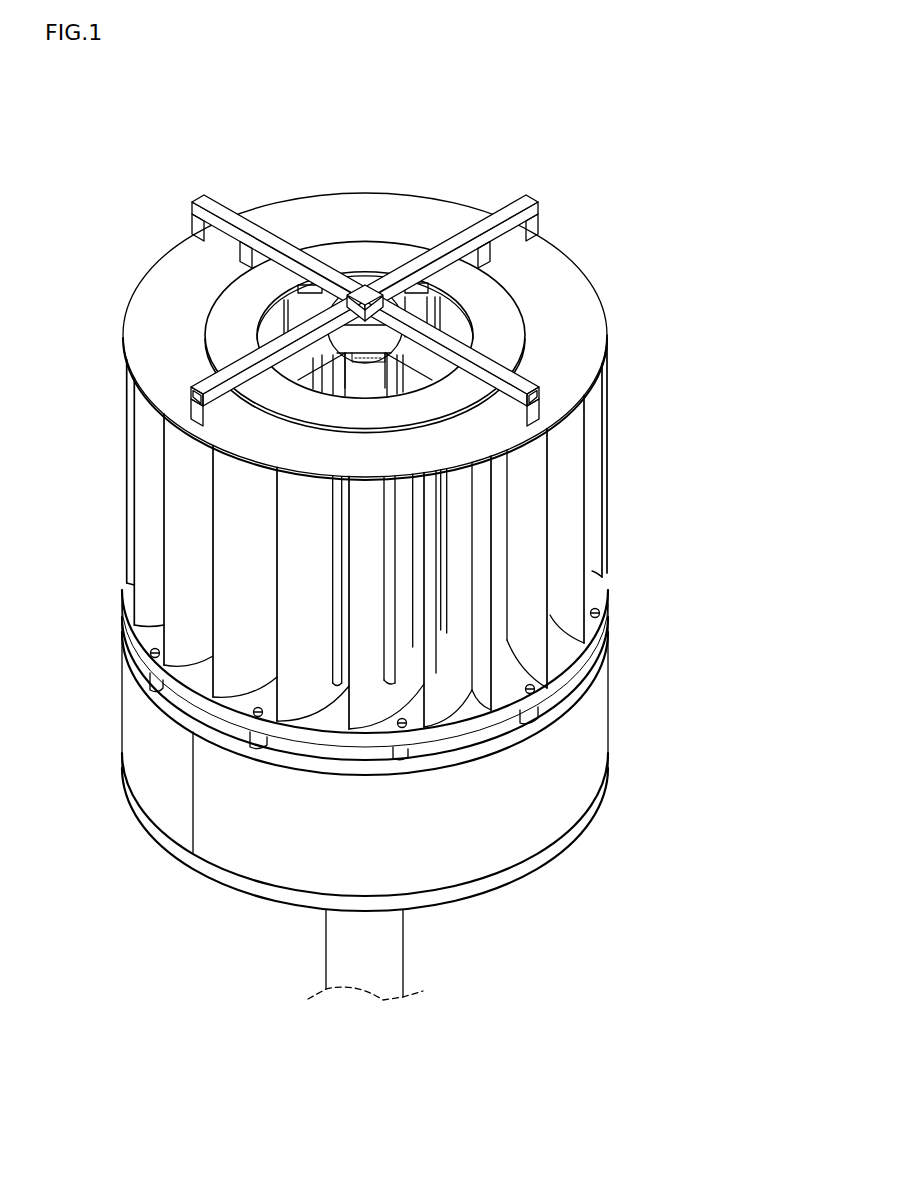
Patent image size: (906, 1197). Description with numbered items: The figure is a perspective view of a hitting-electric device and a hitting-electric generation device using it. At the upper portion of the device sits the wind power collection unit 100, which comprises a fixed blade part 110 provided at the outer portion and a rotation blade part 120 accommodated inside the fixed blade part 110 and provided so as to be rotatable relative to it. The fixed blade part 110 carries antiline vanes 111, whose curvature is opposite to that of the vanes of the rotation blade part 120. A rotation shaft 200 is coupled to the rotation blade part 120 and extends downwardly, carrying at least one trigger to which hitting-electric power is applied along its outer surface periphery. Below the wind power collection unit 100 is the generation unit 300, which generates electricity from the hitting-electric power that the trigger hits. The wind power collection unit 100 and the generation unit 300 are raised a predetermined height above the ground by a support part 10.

The support part 10 is at (415, 953).
The wind power collection unit 100 is at (452, 336).
The fixed blade part 110 is at (565, 362).
The antiline vane 111 is at (568, 516).
The rotation blade part 120 is at (497, 330).
The rotation shaft 200 is at (363, 379).
The generation unit 300 is at (600, 728).